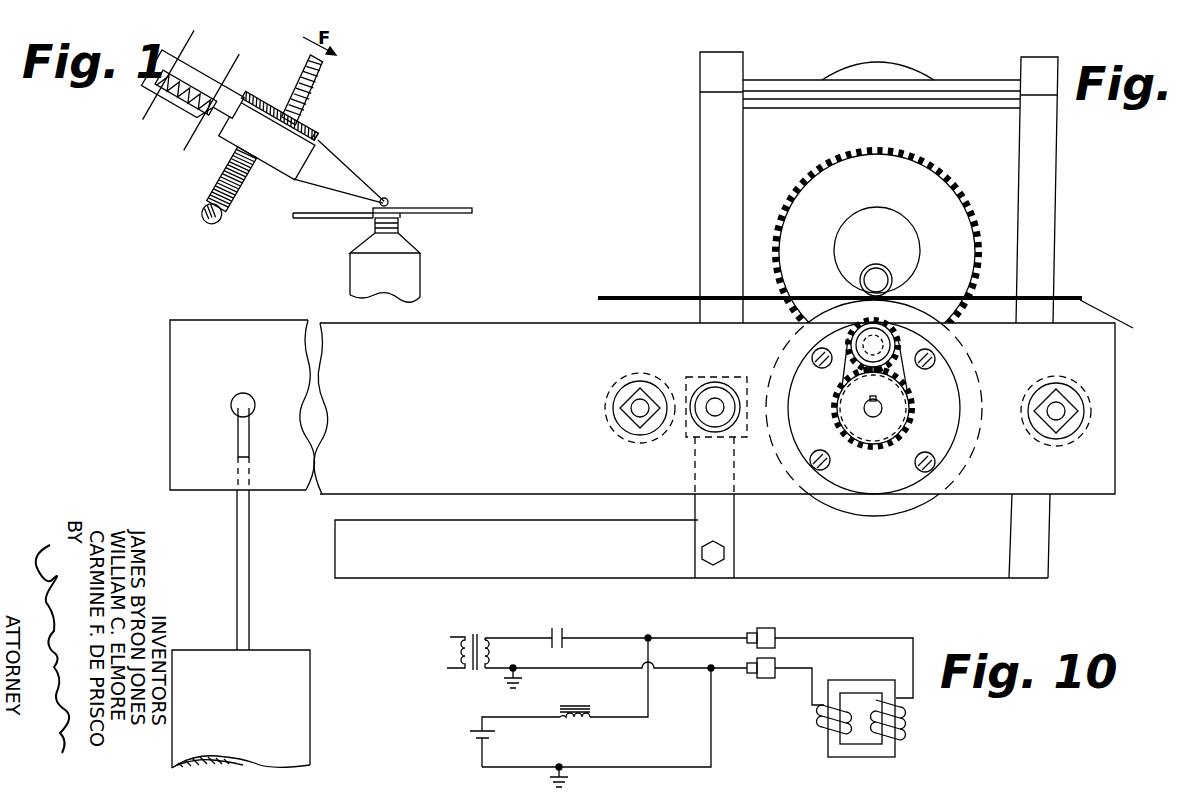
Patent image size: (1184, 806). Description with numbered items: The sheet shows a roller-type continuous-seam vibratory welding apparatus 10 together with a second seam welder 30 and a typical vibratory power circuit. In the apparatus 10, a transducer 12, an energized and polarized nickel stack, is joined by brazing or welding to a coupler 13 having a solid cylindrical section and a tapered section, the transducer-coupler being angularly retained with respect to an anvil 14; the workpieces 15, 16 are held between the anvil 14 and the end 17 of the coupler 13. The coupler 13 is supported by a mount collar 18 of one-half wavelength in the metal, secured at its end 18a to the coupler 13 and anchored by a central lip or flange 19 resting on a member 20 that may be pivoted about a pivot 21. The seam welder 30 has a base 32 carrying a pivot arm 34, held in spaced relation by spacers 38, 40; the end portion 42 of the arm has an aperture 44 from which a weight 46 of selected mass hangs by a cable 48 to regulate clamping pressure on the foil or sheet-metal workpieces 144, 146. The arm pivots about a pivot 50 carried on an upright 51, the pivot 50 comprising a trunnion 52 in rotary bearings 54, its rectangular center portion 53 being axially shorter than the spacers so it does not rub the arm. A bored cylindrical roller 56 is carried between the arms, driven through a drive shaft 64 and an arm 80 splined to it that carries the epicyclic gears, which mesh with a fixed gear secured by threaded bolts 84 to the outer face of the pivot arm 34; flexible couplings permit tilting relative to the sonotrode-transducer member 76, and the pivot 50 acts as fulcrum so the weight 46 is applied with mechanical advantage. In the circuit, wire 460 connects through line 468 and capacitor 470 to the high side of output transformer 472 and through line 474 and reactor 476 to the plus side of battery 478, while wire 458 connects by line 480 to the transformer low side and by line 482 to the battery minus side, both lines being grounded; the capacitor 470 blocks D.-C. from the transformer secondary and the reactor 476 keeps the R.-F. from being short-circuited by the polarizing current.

In FIG. 1, the roller-type continuous-seam welding apparatus 10 is at (172, 145).
In FIG. 1, the transducer 12 is at (218, 99).
In FIG. 1, the coupler 13 is at (303, 147).
In FIG. 1, the anvil 14 is at (391, 227).
In FIG. 1, the workpiece 15 is at (321, 219).
In FIG. 1, the workpiece 16 is at (441, 208).
In FIG. 1, the end of coupler 17 is at (388, 199).
In FIG. 1, the mount collar 18 is at (300, 117).
In FIG. 1, the end of mount collar 18a is at (321, 141).
In FIG. 1, the lip or flange 19 is at (302, 94).
In FIG. 1, the member 20 is at (236, 168).
In FIG. 1, the pivot 21 is at (202, 217).
In FIG. 2, the seam welder 30 is at (690, 257).
In FIG. 2, the base 32 is at (713, 572).
In FIG. 2, the pivot arm 34 is at (1100, 363).
In FIG. 2, the spacer 38 is at (1092, 418).
In FIG. 2, the spacer 40 is at (625, 380).
In FIG. 2, the end portion of pivot arm 42 is at (178, 354).
In FIG. 2, the aperture 44 is at (245, 397).
In FIG. 2, the weight 46 is at (293, 708).
In FIG. 2, the cable 48 is at (250, 599).
In FIG. 2, the pivot 50 is at (718, 408).
In FIG. 2, the upright 51 is at (718, 508).
In FIG. 2, the trunnion 52 is at (703, 413).
In FIG. 2, the center portion of trunnion 53 is at (732, 377).
In FIG. 2, the rotary bearing 54 is at (707, 390).
In FIG. 2, the roller 56 is at (908, 320).
In FIG. 2, the drive shaft 64 is at (880, 413).
In FIG. 2, the transducer-coupler member 76 is at (906, 240).
In FIG. 2, the arm 80 is at (903, 369).
In FIG. 2, the threaded bolt 84 is at (928, 470).
In FIG. 2, the workpiece 144 is at (1078, 296).
In FIG. 2, the workpiece 146 is at (1127, 319).
In FIG. 10, the wire 458 is at (727, 672).
In FIG. 10, the wire 460 is at (705, 638).
In FIG. 10, the line 468 is at (614, 638).
In FIG. 10, the capacitor 470 is at (552, 628).
In FIG. 10, the output transformer 472 is at (488, 645).
In FIG. 10, the line 474 is at (650, 690).
In FIG. 10, the reactor 476 is at (586, 705).
In FIG. 10, the battery 478 is at (470, 734).
In FIG. 10, the line 480 is at (568, 669).
In FIG. 10, the line 482 is at (662, 767).